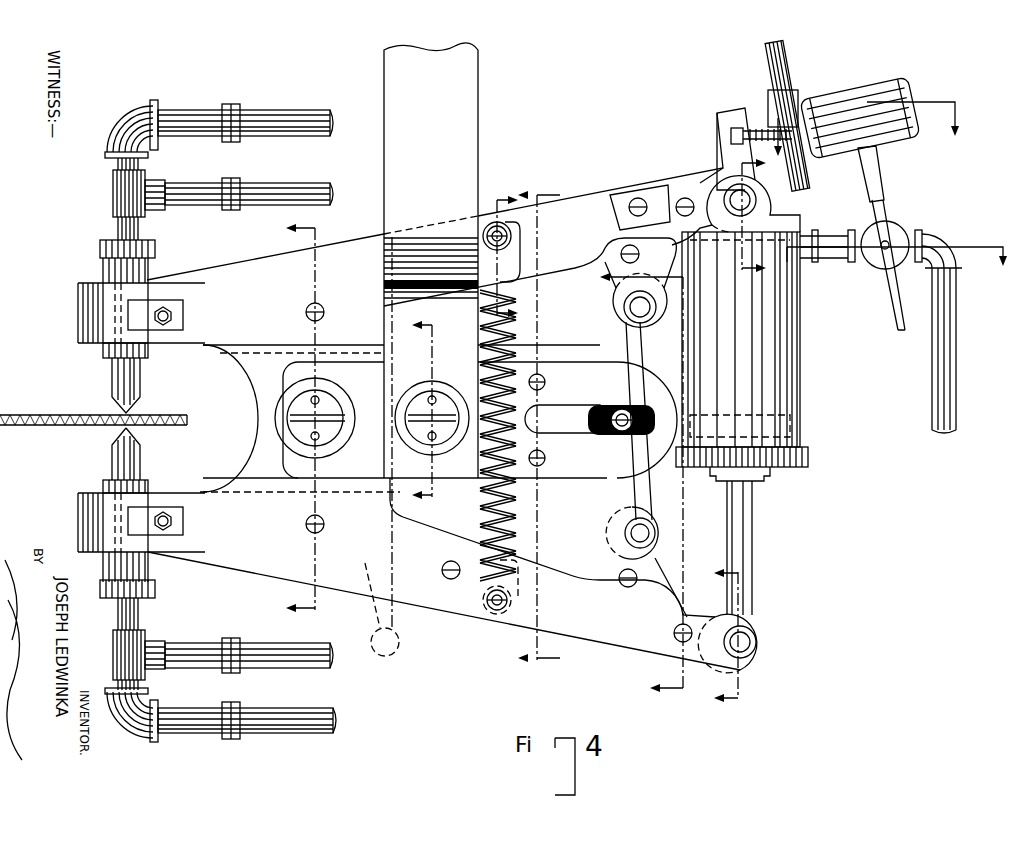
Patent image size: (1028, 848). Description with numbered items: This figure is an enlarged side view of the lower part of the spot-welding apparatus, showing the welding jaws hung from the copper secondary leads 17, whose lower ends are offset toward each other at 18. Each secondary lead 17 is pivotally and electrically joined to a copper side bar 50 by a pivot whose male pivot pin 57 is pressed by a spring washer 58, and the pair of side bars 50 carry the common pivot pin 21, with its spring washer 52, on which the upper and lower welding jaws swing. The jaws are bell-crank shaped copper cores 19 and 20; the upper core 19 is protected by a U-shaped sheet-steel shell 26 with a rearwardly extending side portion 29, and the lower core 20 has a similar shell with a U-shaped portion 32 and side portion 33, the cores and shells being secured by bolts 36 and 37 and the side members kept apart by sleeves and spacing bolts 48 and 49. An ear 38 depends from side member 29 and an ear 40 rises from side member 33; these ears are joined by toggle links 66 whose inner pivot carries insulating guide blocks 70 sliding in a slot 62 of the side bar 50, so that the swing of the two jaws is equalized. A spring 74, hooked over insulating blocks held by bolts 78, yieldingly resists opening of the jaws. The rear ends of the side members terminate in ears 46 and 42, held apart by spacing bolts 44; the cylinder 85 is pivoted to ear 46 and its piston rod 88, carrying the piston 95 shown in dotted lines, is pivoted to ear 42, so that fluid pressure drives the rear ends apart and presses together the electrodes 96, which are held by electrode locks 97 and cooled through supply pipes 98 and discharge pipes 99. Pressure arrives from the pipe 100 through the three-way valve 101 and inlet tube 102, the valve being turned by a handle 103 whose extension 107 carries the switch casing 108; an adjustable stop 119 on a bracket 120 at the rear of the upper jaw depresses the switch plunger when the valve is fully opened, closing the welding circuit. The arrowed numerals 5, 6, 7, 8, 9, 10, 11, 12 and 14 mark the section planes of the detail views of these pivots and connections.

The secondary leads 17 is at (455, 102).
The offset lower ends of secondary leads 18 is at (417, 373).
The copper core of upper welding jaw 19 is at (290, 347).
The copper core of lower welding jaw 20 is at (382, 609).
The common pivot pin 21 is at (300, 432).
The U-shaped protecting shell 26 is at (110, 312).
The side portion of upper jaw shell 29 is at (270, 290).
The U-shaped portion of lower jaw shell 32 is at (108, 525).
The side portion of lower jaw shell 33 is at (210, 537).
The bolt 36 is at (320, 305).
The bolt 37 is at (320, 535).
The ear of upper welding jaw 38 is at (645, 298).
The ear of lower welding jaw 40 is at (617, 557).
The ear at rear end of lower jaw 42 is at (700, 638).
The spacing bolt 44 is at (680, 203).
The ear at rear end of upper jaw 46 is at (707, 205).
The sleeve and spacing bolt 48 is at (622, 254).
The sleeve and spacing bolt 49 is at (446, 564).
The copper side bars 50 is at (358, 452).
The spring washer 52 is at (283, 400).
The male pivot pin 57 is at (437, 412).
The spring washer 58 is at (450, 405).
The slot 62 is at (565, 425).
The toggle links 66 is at (624, 345).
The guide blocks 70 is at (648, 432).
The spring 74 is at (512, 340).
The bolt 78 is at (513, 243).
The cylinder 85 is at (765, 383).
The piston rod 88 is at (740, 500).
The piston 95 is at (762, 437).
The welding electrodes 96 is at (115, 378).
The electrode locks 97 is at (172, 314).
The cooling supply pipes 98 is at (280, 128).
The cooling discharge pipes 99 is at (272, 198).
The pipe 100 is at (945, 338).
The three-way valve 101 is at (900, 232).
The inlet tube 102 is at (832, 243).
The handle 103 is at (905, 305).
The handle extension 107 is at (872, 162).
The switch casing 108 is at (870, 107).
The adjustable stop 119 is at (775, 127).
The bracket 120 is at (722, 157).
The section line 5- 5 is at (546, 427).
The section line 6- 6 is at (288, 418).
The section line 7- 7 is at (632, 484).
The section line 8- 8 is at (506, 249).
The primary winding 9 is at (432, 412).
The transformer 10 is at (741, 217).
The cradle 11 is at (712, 637).
The cross-bar 12 is at (899, 267).
The support 14 is at (869, 144).